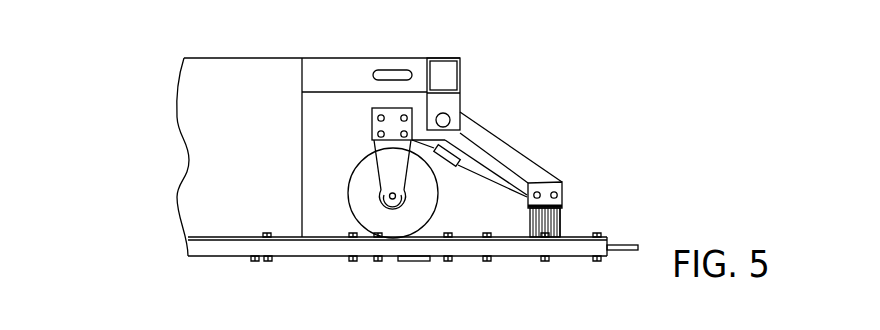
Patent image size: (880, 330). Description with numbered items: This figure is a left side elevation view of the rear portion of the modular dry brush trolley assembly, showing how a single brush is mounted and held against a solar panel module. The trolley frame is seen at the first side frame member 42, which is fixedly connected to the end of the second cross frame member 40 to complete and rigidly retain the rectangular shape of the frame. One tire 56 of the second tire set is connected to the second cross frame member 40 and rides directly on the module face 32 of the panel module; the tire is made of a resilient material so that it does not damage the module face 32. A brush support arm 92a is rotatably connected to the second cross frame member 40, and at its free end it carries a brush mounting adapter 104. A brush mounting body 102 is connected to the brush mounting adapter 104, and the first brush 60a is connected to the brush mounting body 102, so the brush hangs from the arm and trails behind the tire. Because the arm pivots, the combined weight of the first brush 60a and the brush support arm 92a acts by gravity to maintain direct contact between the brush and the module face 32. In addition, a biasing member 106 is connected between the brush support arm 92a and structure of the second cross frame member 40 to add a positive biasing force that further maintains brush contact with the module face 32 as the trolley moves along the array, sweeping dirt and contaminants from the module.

The first side frame member 42 is at (347, 62).
The second cross frame member 40 is at (460, 75).
The tire of second tire set 56 is at (375, 222).
The biasing member 106 is at (458, 152).
The brush support arm 92a is at (523, 157).
The brush mounting adapter 104 is at (528, 198).
The brush mounting body 102 is at (529, 212).
The first brush 60a is at (562, 216).
The module face 32 is at (589, 233).